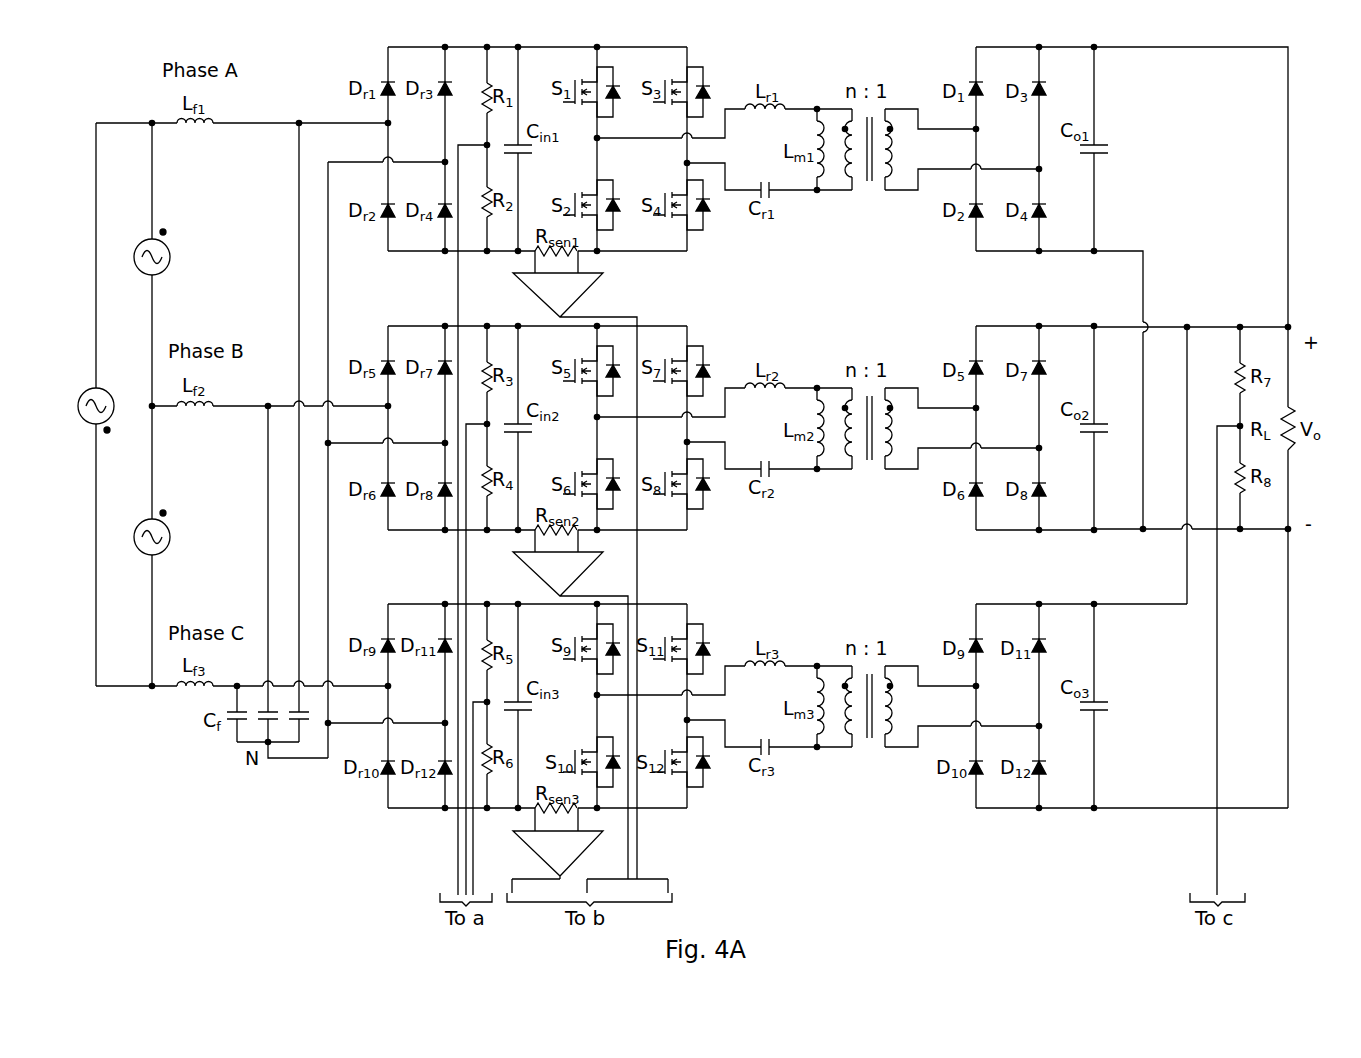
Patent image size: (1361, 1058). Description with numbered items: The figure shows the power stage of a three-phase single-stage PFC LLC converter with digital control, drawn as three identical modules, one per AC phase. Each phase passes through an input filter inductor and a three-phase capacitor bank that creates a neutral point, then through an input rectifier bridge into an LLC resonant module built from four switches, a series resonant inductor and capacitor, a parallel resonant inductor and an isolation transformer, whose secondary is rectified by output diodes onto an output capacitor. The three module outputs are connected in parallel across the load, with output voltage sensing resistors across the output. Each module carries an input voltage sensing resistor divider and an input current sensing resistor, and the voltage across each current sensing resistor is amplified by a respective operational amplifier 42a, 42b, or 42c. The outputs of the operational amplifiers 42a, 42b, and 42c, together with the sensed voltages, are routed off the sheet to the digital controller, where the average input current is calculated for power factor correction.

The operational amplifier 42a is at (543, 302).
The operational amplifier 42b is at (543, 581).
The operational amplifier 42c is at (543, 860).